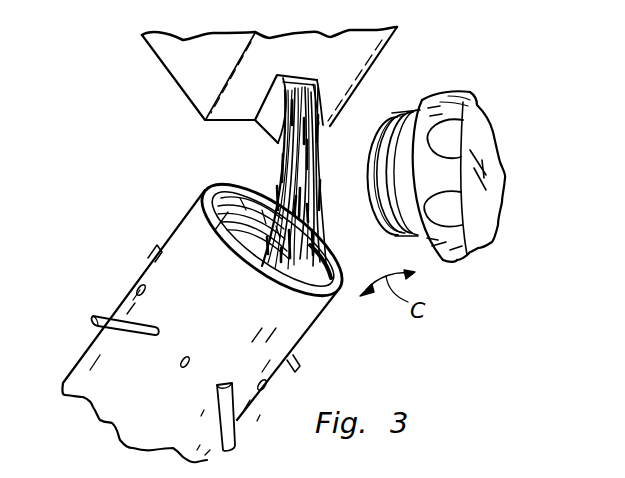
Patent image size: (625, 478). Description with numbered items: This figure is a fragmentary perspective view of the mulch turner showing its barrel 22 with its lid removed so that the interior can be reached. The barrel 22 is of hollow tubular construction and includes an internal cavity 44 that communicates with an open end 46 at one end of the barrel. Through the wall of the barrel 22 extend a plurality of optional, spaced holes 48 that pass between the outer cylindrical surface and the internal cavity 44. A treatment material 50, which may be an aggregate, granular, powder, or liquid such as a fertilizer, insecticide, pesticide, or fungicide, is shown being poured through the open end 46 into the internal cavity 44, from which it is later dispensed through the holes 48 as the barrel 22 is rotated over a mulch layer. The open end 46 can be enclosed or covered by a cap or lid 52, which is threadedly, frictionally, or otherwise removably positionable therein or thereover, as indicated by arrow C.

The barrel 22 is at (305, 336).
The internal cavity 44 is at (250, 192).
The open end 46 is at (318, 270).
The holes 48 is at (137, 288).
The treatment material 50 is at (305, 180).
The cap or lid 52 is at (495, 238).